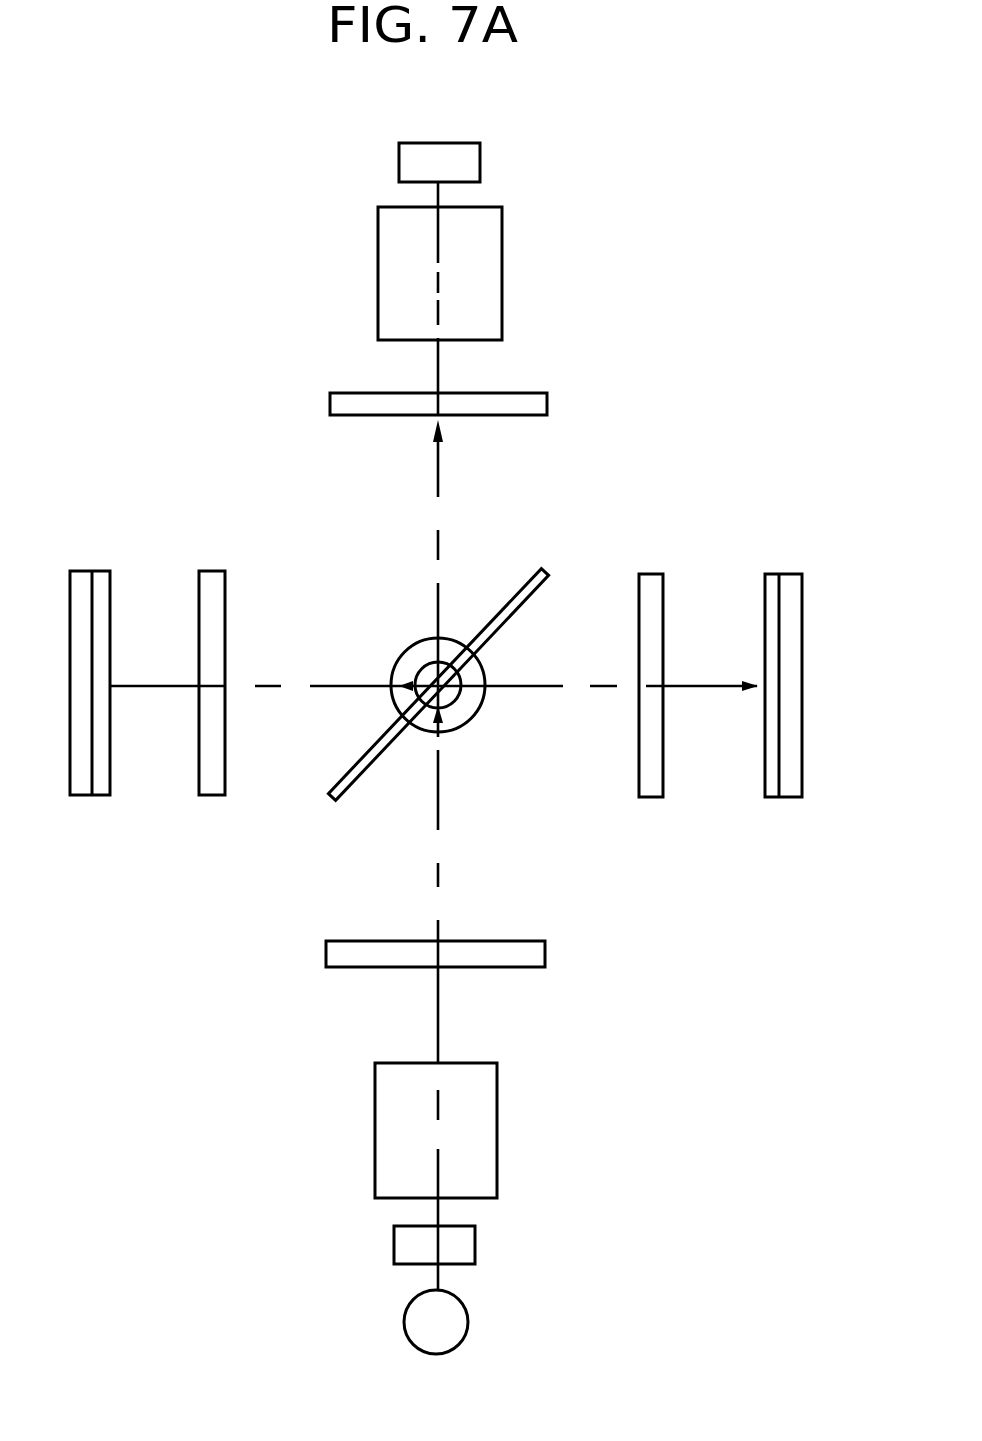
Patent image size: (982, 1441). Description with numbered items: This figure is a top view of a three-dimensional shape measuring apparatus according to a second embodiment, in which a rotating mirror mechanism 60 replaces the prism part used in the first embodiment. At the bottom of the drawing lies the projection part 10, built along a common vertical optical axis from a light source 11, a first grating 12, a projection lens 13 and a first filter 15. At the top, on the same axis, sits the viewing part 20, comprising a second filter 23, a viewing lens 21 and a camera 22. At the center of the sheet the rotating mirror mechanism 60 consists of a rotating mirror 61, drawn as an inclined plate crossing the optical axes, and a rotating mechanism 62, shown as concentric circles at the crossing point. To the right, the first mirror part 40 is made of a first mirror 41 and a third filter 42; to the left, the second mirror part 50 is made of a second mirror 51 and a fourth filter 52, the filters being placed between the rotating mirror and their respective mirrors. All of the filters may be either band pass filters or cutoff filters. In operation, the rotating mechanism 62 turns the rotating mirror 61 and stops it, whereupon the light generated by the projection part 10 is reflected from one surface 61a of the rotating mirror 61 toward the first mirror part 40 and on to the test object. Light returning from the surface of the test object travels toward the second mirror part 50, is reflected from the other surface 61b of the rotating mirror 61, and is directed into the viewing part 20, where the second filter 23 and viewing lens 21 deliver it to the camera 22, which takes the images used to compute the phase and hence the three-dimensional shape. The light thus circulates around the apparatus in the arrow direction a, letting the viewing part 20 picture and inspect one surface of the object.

The projection part 10 is at (352, 1147).
The light source 11 is at (360, 1322).
The first grating 12 is at (407, 1242).
The projection lens 13 is at (375, 1135).
The first filter 15 is at (328, 967).
The viewing part 20 is at (527, 279).
The viewing lens 21 is at (490, 285).
The camera 22 is at (472, 163).
The second filter 23 is at (481, 395).
The first mirror part 40 is at (719, 796).
The first mirror 41 is at (779, 797).
The third filter 42 is at (650, 797).
The second mirror part 50 is at (149, 585).
The second mirror 51 is at (87, 562).
The fourth filter 52 is at (213, 626).
The rotating mirror mechanism 60 is at (348, 673).
The rotating mirror 61 is at (348, 702).
The one surface of the rotating mirror 61a is at (352, 784).
The another surface of the rotating mirror 61b is at (346, 776).
The rotating mechanism 62 is at (410, 647).
The arrow direction a is at (440, 437).